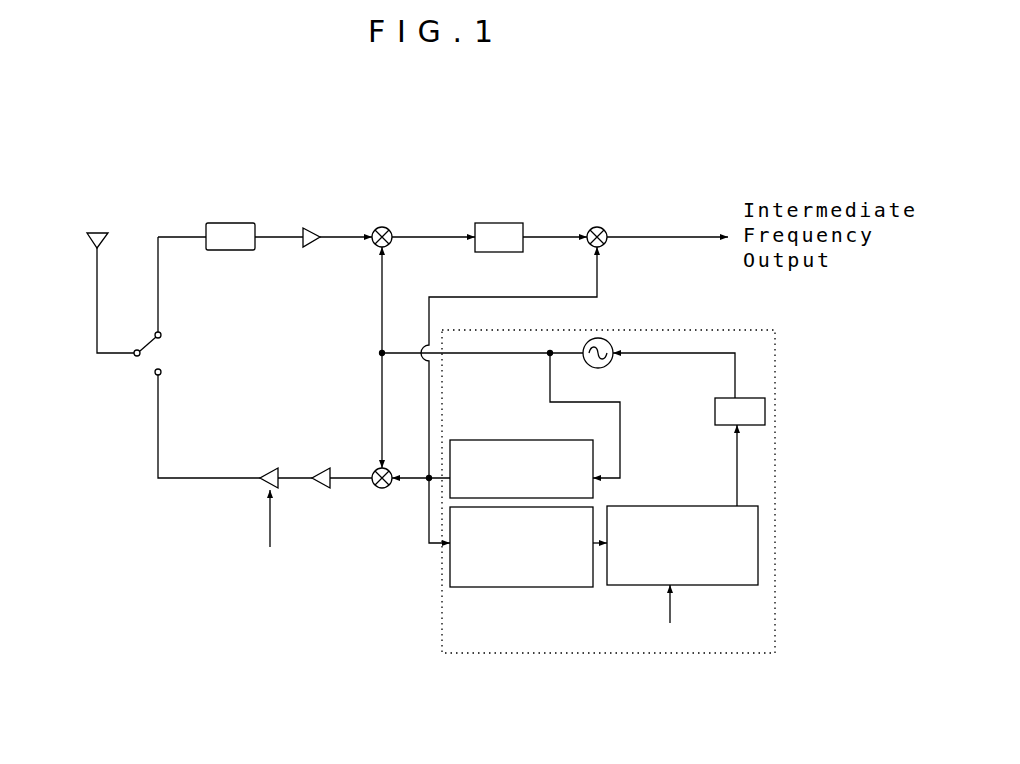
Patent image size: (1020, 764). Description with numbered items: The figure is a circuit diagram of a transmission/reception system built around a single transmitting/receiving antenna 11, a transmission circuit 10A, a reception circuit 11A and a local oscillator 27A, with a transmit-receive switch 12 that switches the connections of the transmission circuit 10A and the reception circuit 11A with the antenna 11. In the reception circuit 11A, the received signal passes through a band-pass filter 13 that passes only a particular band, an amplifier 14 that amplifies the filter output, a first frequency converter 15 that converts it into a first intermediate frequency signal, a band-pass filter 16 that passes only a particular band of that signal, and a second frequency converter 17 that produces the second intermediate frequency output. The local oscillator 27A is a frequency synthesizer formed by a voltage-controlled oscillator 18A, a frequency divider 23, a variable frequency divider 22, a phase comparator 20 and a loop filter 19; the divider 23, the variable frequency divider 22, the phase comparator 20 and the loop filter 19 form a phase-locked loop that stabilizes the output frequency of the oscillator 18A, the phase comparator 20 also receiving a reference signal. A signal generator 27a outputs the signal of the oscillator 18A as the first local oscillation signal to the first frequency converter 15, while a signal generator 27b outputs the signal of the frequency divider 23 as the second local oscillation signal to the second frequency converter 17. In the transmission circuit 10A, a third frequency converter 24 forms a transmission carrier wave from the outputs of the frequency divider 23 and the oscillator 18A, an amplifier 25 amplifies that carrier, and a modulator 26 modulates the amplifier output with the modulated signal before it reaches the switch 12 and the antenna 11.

The transmission circuit 10A is at (180, 522).
The transmitting/receiving antenna 11 is at (88, 243).
The reception circuit 11A is at (237, 167).
The transmit-receive switch 12 is at (160, 355).
The band-pass filter 13 is at (225, 223).
The amplifier 14 is at (300, 228).
The first frequency converter 15 is at (373, 227).
The band-pass filter 16 is at (476, 222).
The second frequency converter 17 is at (585, 225).
The voltage-controlled oscillator 18A is at (612, 340).
The loop filter 19 is at (760, 398).
The phase comparator 20 is at (705, 587).
The variable frequency divider 22 is at (505, 587).
The frequency divider 23 is at (502, 440).
The third frequency converter 24 is at (387, 487).
The amplifier 25 is at (327, 488).
The modulator 26 is at (275, 488).
The local oscillator 27A is at (775, 557).
The signal generator 27a is at (382, 353).
The signal generator 27b is at (428, 475).